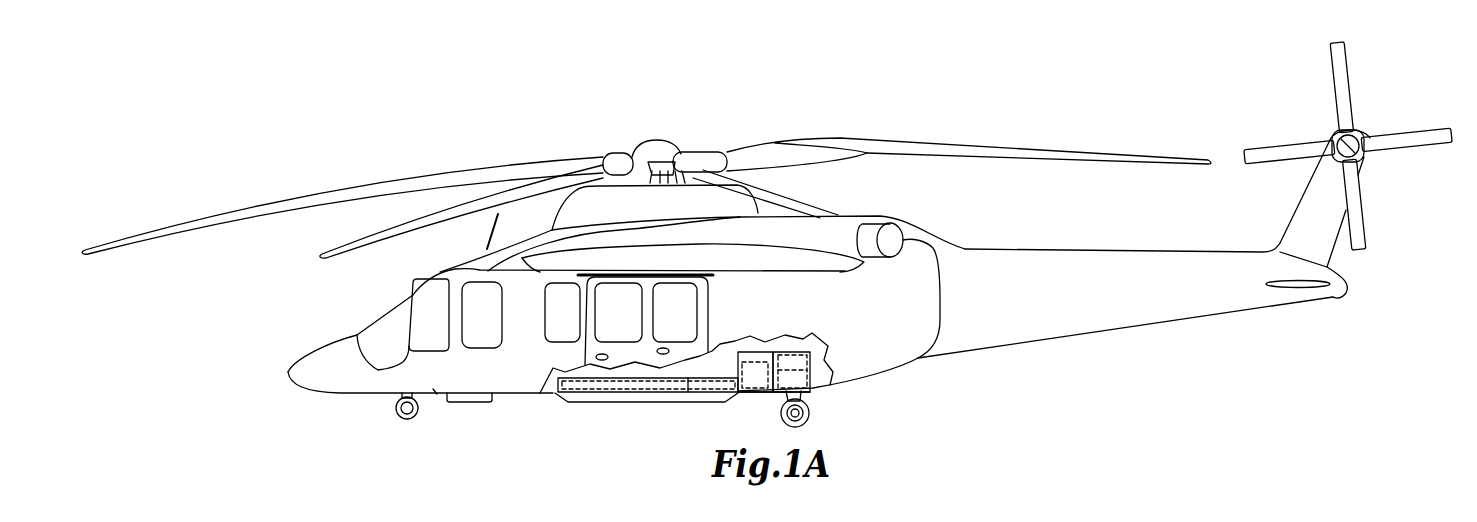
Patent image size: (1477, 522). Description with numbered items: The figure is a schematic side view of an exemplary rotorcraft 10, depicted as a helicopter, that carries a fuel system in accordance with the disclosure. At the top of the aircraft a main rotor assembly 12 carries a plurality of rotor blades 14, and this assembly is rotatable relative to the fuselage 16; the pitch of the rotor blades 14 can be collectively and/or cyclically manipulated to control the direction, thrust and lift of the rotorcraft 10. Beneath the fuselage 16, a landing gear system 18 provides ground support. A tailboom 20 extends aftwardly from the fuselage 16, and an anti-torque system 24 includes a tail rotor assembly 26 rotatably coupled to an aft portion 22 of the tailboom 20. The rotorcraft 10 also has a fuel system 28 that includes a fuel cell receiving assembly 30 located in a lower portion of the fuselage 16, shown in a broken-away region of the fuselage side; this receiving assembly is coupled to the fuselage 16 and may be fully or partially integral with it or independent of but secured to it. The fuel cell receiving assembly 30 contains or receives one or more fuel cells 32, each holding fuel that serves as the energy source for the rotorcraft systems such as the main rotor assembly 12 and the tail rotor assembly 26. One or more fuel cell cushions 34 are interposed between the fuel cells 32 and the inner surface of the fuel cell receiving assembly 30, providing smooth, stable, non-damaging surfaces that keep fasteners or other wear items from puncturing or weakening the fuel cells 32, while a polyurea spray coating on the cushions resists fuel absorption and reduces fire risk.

The rotorcraft 10 is at (512, 144).
The main rotor assembly 12 is at (650, 146).
The rotor blades 14 is at (935, 147).
The fuselage 16 is at (437, 393).
The landing gear system 18 is at (812, 420).
The tailboom 20 is at (987, 340).
The aft portion 22 is at (1285, 300).
The anti-torque system 24 is at (1372, 118).
The tail rotor assembly 26 is at (1332, 166).
The fuel system 28 is at (617, 392).
The fuel cell receiving assembly 30 is at (713, 374).
The fuel cells 32 is at (762, 362).
The fuel cell cushions 34 is at (748, 393).